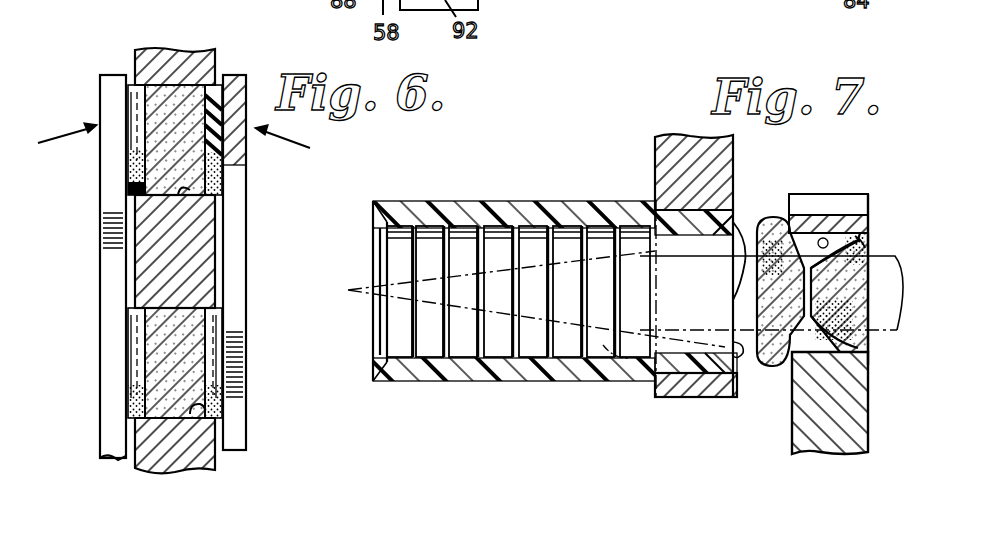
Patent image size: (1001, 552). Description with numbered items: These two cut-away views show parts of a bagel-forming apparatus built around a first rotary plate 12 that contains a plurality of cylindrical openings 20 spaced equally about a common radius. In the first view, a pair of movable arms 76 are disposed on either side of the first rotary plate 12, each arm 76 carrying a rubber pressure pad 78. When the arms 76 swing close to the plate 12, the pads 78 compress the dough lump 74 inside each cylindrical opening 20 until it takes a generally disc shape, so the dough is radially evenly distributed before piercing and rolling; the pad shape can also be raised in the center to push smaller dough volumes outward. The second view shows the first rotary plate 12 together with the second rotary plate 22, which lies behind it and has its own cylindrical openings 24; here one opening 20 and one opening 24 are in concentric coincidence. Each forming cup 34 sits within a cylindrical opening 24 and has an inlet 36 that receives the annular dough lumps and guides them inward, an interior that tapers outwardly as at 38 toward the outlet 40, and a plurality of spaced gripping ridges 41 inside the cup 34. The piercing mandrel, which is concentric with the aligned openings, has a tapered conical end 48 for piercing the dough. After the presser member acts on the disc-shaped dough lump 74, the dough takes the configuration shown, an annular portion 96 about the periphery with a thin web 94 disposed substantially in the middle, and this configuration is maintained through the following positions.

In FIG. 7, the first rotary plate 12 is at (812, 421).
In FIG. 6, the first rotary plate 12 is at (157, 50).
In FIG. 7, the cylindrical opening 20 is at (823, 238).
In FIG. 6, the cylindrical opening 20 is at (180, 198).
In FIG. 7, the second rotary plate 22 is at (676, 148).
In FIG. 7, the cylindrical opening 24 is at (681, 366).
In FIG. 7, the forming cup 34 is at (461, 377).
In FIG. 7, the inlet 36 is at (743, 350).
In FIG. 7, the outwardly tapering interior 38 is at (455, 237).
In FIG. 7, the outlet 40 is at (379, 348).
In FIG. 7, the gripping ridge 41 is at (408, 254).
In FIG. 7, the tapered conical end 48 is at (531, 268).
In FIG. 7, the dough lump 74 is at (873, 246).
In FIG. 6, the dough lump 74 is at (178, 152).
In FIG. 6, the movable arm 76 is at (112, 282).
In FIG. 6, the rubber pressure pad 78 is at (128, 106).
In FIG. 7, the thin web 94 is at (872, 300).
In FIG. 7, the annular portion 96 is at (773, 222).